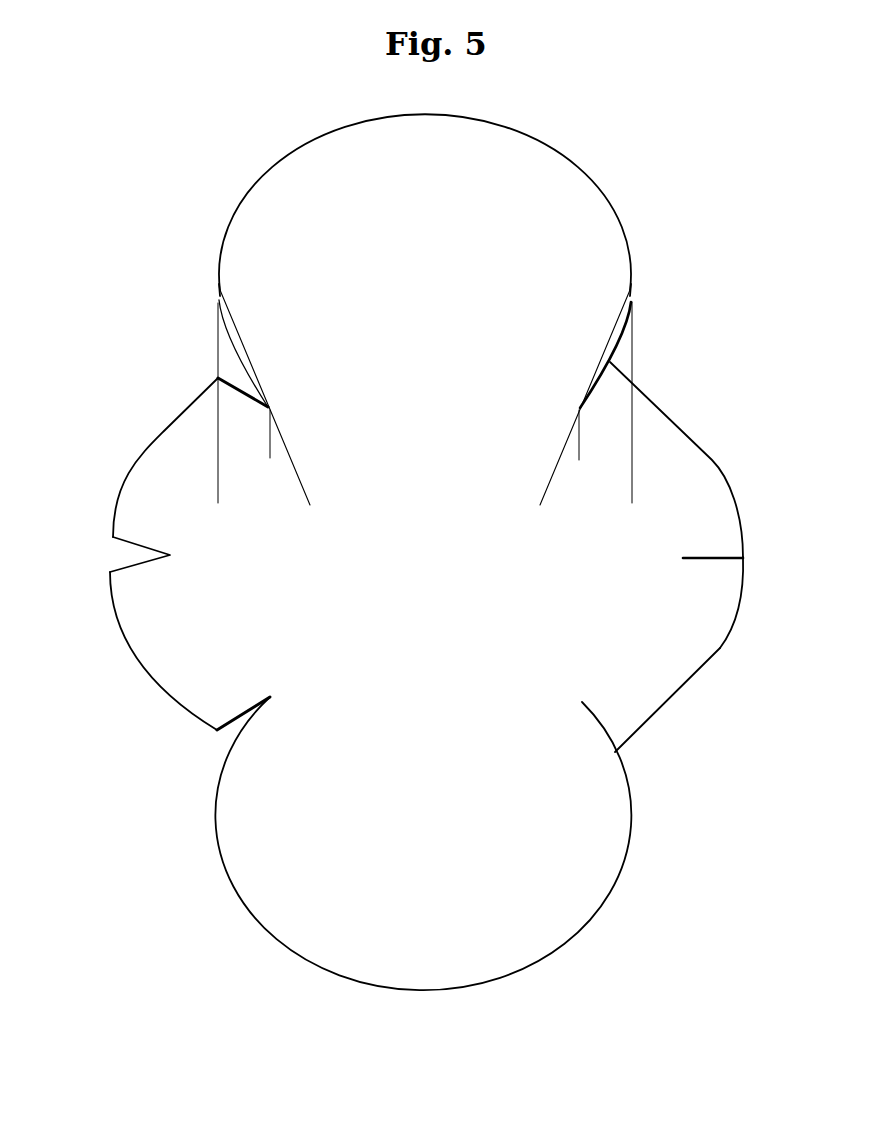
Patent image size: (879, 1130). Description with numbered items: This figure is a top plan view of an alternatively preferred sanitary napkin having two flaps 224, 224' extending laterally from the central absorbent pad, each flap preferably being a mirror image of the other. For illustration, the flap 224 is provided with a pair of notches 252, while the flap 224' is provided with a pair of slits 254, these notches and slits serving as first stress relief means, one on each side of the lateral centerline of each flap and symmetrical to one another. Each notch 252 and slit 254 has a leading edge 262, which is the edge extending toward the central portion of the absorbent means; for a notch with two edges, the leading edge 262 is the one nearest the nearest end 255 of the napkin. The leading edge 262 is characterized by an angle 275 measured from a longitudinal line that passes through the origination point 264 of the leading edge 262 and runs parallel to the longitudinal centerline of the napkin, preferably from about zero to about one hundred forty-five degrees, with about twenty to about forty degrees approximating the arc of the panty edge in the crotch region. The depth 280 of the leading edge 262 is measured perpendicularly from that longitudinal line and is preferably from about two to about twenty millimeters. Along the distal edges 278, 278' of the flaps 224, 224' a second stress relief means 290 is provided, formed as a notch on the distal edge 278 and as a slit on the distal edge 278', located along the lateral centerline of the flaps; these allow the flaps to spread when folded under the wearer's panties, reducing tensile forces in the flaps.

The end of the napkin 255 is at (505, 128).
The origination point 264 is at (219, 291).
The leading edge 262 is at (246, 371).
The depth 280 is at (278, 437).
The angle 275 is at (291, 482).
The flap 224 is at (158, 457).
The flap 224' is at (704, 459).
The second stress relief means 290 is at (103, 546).
The distal edge 278 is at (130, 651).
The distal edge 278' is at (767, 602).
The notch 252 is at (230, 740).
The slit 254 is at (597, 730).